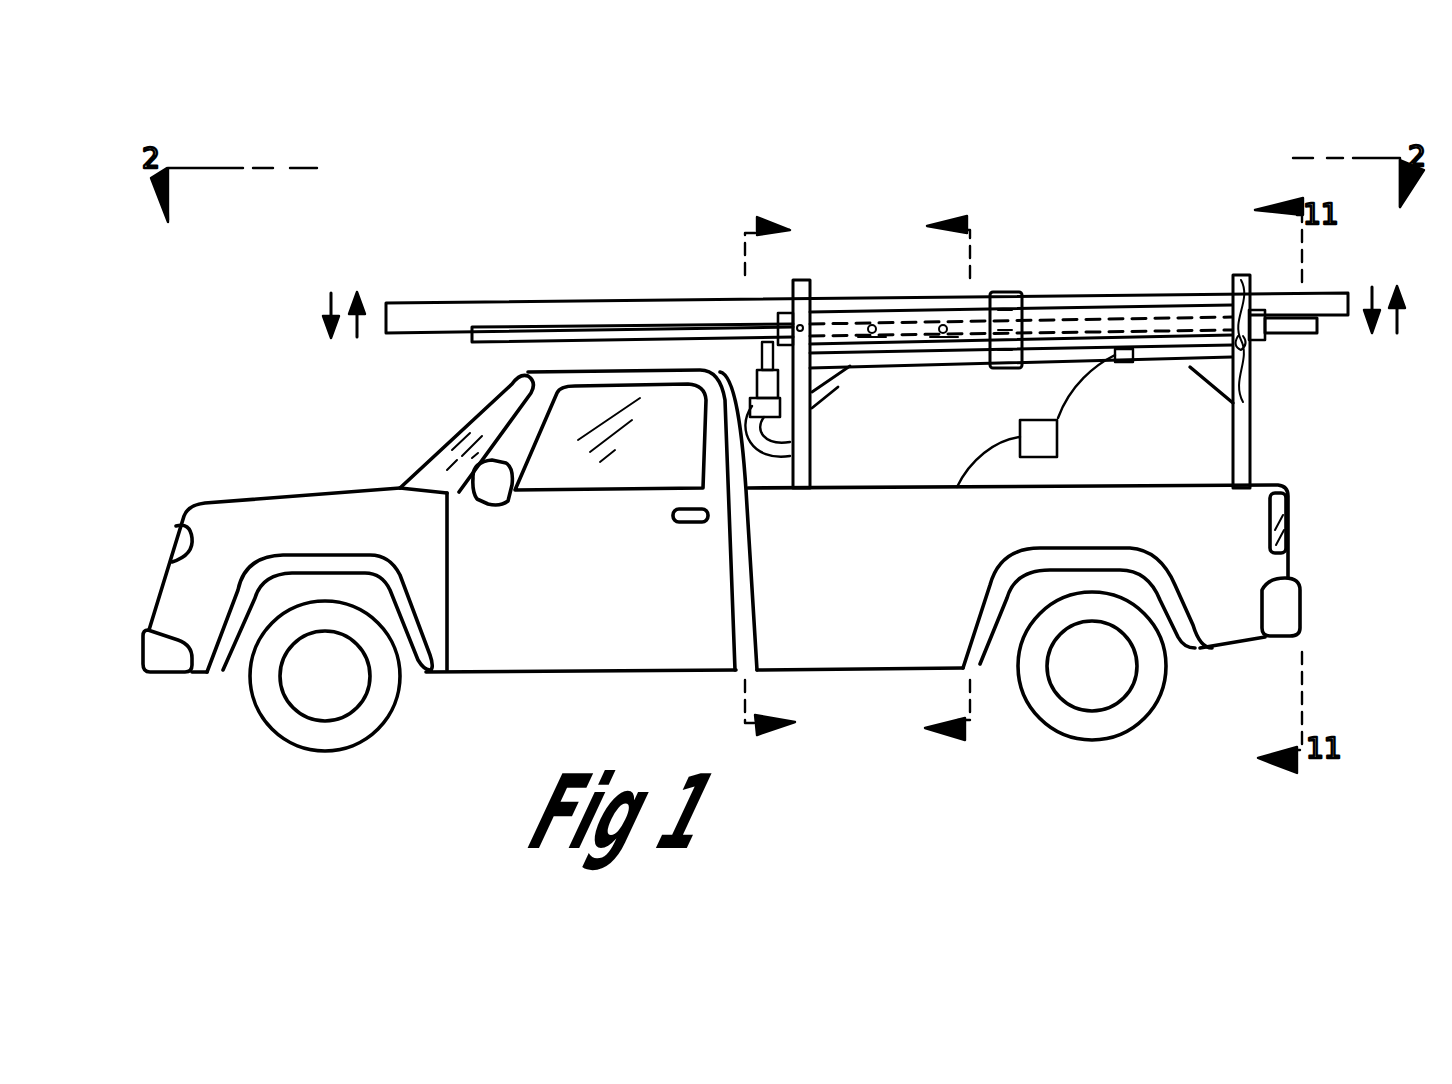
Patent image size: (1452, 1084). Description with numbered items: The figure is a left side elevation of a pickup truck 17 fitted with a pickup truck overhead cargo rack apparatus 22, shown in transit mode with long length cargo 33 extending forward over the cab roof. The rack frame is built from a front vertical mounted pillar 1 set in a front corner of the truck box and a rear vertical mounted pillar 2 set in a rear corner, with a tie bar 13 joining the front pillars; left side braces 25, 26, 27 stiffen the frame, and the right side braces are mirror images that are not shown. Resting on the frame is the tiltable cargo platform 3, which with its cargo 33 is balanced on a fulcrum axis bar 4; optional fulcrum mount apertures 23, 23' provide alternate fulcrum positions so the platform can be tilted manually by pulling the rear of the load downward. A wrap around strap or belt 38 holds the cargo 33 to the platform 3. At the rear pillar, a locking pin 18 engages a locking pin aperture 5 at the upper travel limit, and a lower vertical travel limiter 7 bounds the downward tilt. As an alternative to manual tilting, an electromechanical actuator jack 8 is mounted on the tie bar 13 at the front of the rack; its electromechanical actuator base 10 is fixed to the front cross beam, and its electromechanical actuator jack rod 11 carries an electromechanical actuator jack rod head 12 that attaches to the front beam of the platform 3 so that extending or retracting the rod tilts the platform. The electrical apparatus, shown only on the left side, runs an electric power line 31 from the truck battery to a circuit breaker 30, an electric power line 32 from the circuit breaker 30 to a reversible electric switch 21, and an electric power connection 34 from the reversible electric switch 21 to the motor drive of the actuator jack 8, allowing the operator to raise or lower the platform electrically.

The front vertical mounted pillar 1 is at (797, 283).
The rear vertical mounted pillar 2 is at (1243, 290).
The tiltable cargo platform 3 is at (485, 336).
The fulcrum axis bar 4 is at (797, 325).
The locking pin aperture 5 is at (1255, 303).
The lower vertical travel limiter 7 is at (758, 483).
The electromechanical actuator jack 8 is at (813, 385).
The electromechanical actuator base 10 is at (790, 437).
The electromechanical actuator jack rod 11 is at (763, 372).
The electromechanical actuator jack rod head 12 is at (770, 342).
The tie bar 13 is at (967, 482).
The pickup truck 17 is at (243, 512).
The locking pin 18 is at (1250, 378).
The reversible electric switch 21 is at (1122, 362).
The pickup truck overhead cargo rack apparatus 22 is at (1323, 362).
The optional fulcrum mount aperture 23 is at (871, 300).
The optional fulcrum mount aperture 23' is at (938, 300).
The left side brace 25 is at (935, 365).
The left side brace 26 is at (817, 392).
The left side brace 27 is at (1226, 392).
The circuit breaker 30 is at (1057, 447).
The electric power line 31 is at (972, 453).
The electric power line 32 is at (1060, 392).
The long length cargo 33 is at (497, 306).
The electric power connection 34 is at (1128, 345).
The wrap around strap or belt 38 is at (1005, 292).